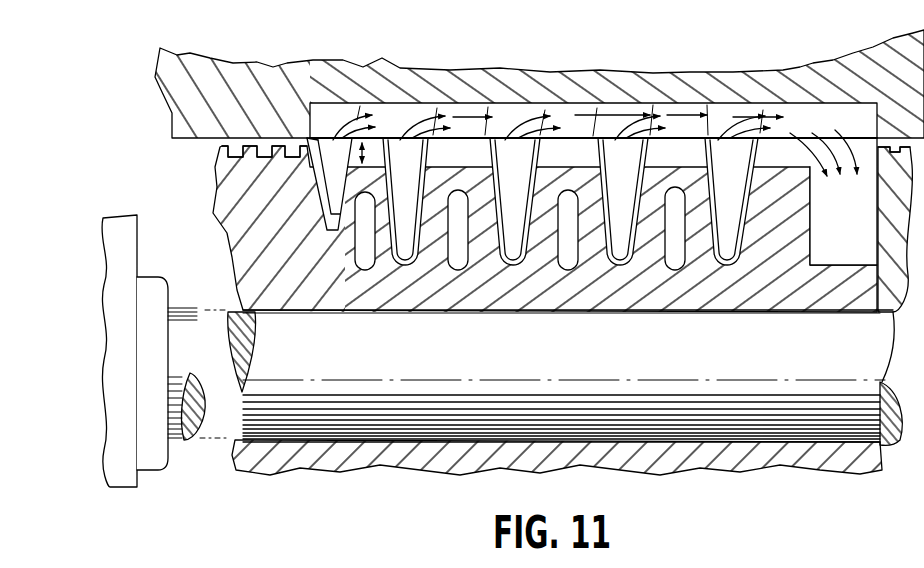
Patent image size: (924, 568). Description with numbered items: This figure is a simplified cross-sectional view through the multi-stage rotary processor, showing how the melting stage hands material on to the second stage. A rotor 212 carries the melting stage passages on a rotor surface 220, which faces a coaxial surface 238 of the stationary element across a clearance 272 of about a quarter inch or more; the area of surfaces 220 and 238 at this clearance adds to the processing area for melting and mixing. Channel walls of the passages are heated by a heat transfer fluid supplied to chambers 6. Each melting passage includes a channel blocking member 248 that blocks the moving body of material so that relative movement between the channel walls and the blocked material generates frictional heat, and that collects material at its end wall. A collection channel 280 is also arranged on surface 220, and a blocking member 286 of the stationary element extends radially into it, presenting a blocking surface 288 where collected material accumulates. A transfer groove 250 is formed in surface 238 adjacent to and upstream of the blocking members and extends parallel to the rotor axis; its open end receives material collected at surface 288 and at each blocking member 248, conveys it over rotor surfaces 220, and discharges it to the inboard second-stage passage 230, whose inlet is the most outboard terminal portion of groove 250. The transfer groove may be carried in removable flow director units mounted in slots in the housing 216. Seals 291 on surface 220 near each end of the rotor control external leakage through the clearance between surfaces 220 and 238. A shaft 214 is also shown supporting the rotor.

The housing 216 is at (158, 92).
The seals 291 is at (250, 140).
The clearance 272 is at (368, 138).
The transfer groove 250 is at (632, 117).
The surface 220 is at (489, 160).
The coaxial surface 238 is at (592, 140).
The blocking member 286 is at (330, 162).
The blocking surface 288 is at (331, 193).
The collection channel 280 is at (332, 231).
The rotor 212 is at (812, 242).
The chambers 6 is at (362, 270).
The channel blocking member 248 is at (405, 257).
The first passage of the inboard section of the second stage 230 is at (848, 252).
The shaft 214 is at (588, 377).